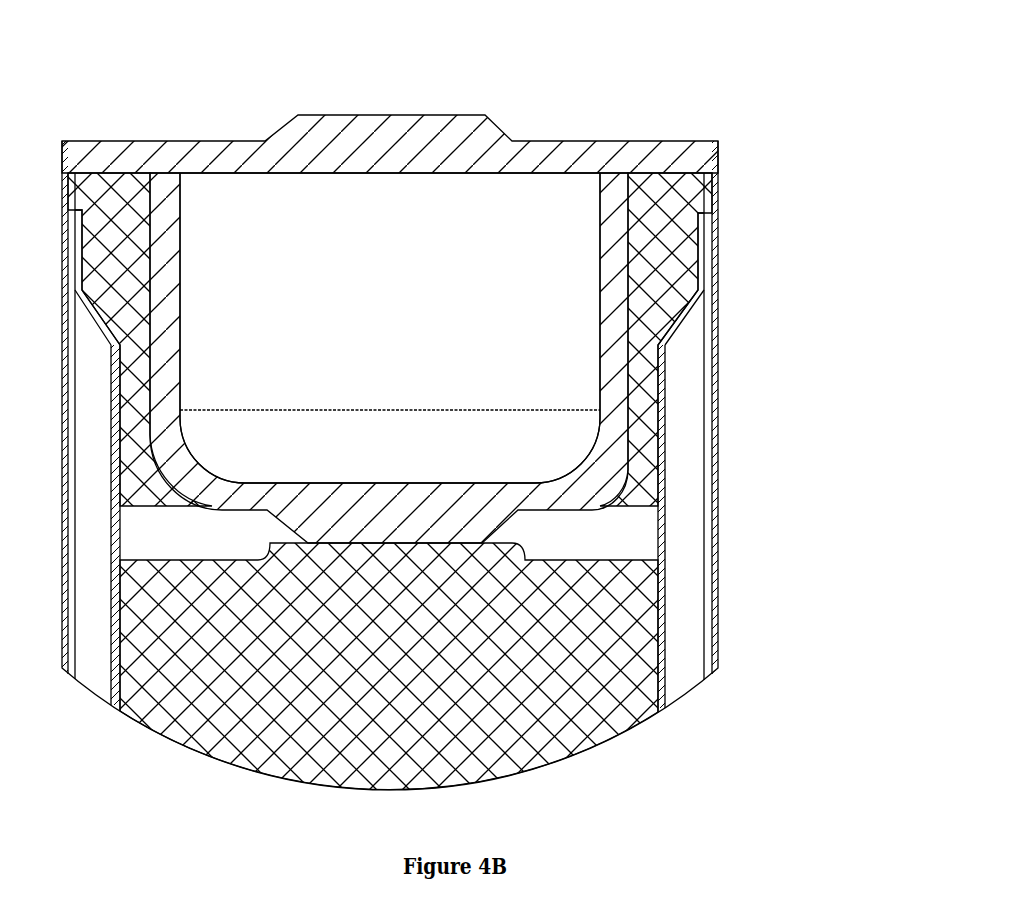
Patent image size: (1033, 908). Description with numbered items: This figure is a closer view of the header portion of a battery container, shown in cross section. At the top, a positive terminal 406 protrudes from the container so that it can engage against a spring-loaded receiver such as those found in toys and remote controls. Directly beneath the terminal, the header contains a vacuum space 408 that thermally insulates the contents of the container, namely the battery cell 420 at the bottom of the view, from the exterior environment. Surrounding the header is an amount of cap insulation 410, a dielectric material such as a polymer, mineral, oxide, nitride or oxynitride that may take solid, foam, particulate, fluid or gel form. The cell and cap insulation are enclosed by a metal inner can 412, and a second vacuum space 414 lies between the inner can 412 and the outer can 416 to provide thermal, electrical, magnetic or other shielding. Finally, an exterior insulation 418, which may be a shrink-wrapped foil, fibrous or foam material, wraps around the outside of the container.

The positive terminal 406 is at (390, 98).
The vacuum space 408 is at (437, 270).
The cap insulation 410 is at (472, 313).
The inner can 412 is at (663, 417).
The vacuum space 414 is at (682, 460).
The outer can 416 is at (708, 507).
The exterior insulation 418 is at (718, 563).
The battery cell 420 is at (510, 700).